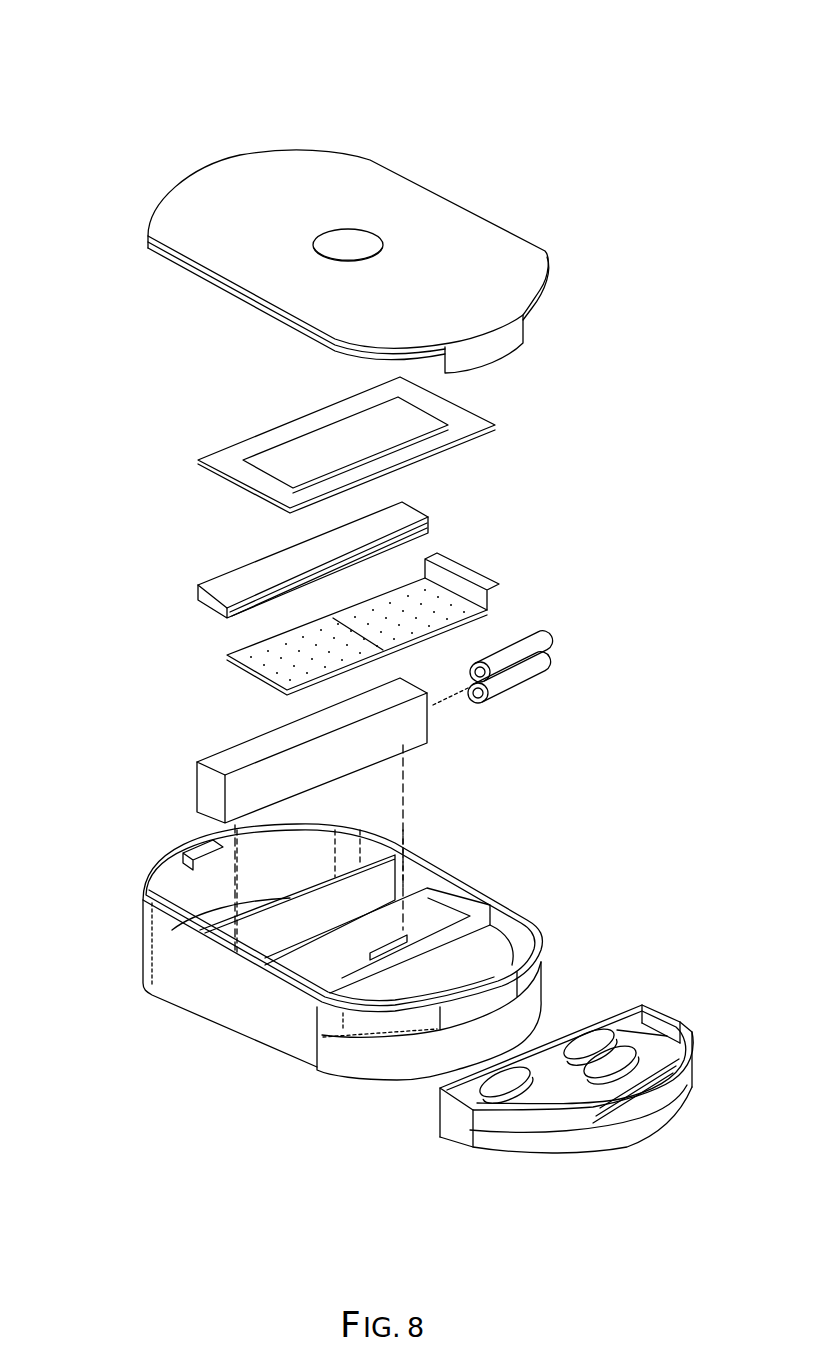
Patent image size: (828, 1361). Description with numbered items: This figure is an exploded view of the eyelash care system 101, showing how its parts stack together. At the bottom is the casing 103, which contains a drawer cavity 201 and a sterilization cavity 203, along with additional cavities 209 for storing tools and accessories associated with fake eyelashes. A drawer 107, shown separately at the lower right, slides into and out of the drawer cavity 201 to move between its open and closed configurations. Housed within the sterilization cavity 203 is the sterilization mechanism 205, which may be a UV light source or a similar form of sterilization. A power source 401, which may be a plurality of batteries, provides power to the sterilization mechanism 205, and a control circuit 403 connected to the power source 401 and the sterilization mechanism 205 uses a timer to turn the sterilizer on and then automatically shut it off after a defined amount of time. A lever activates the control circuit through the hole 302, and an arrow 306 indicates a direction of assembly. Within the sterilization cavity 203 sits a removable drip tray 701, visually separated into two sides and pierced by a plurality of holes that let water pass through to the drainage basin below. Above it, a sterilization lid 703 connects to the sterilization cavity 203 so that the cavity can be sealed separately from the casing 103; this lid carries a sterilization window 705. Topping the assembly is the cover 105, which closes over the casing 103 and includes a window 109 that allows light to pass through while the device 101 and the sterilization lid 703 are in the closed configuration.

The system 101 is at (140, 45).
The casing 103 is at (180, 973).
The cover 105 is at (185, 223).
The drawer 107 is at (463, 1118).
The window 109 is at (347, 248).
The drawer cavity 201 is at (352, 1058).
The sterilization cavity 203 is at (285, 973).
The sterilization mechanism 205 is at (397, 515).
The additional cavities 209 is at (500, 958).
The hole 302 is at (288, 553).
The insertion direction 306 is at (437, 459).
The power source 401 is at (535, 650).
The control circuit 403 is at (210, 785).
The removable drip tray 701 is at (442, 602).
The sterilization lid 703 is at (230, 462).
The sterilization window 705 is at (410, 421).